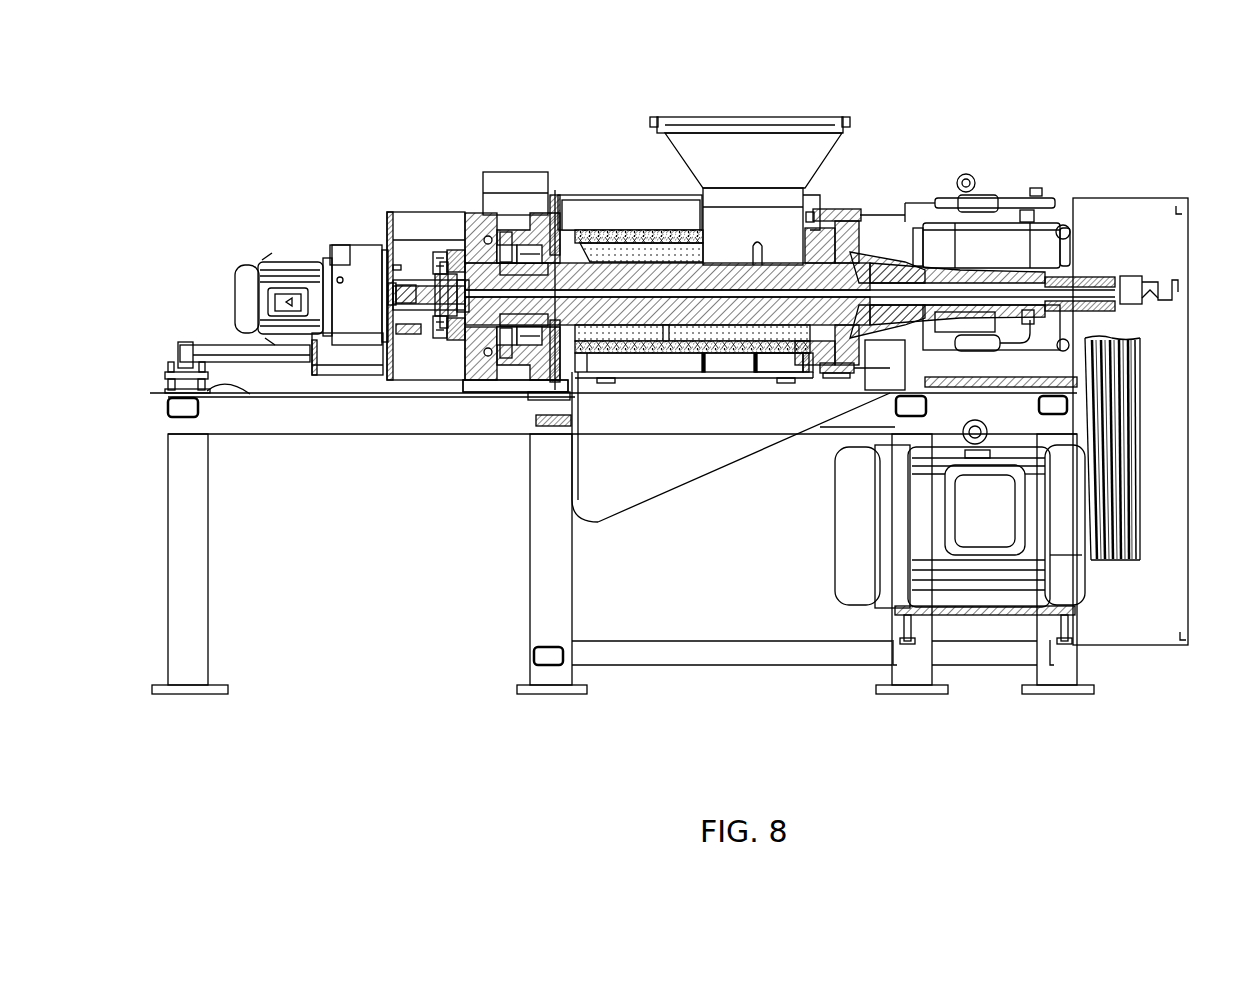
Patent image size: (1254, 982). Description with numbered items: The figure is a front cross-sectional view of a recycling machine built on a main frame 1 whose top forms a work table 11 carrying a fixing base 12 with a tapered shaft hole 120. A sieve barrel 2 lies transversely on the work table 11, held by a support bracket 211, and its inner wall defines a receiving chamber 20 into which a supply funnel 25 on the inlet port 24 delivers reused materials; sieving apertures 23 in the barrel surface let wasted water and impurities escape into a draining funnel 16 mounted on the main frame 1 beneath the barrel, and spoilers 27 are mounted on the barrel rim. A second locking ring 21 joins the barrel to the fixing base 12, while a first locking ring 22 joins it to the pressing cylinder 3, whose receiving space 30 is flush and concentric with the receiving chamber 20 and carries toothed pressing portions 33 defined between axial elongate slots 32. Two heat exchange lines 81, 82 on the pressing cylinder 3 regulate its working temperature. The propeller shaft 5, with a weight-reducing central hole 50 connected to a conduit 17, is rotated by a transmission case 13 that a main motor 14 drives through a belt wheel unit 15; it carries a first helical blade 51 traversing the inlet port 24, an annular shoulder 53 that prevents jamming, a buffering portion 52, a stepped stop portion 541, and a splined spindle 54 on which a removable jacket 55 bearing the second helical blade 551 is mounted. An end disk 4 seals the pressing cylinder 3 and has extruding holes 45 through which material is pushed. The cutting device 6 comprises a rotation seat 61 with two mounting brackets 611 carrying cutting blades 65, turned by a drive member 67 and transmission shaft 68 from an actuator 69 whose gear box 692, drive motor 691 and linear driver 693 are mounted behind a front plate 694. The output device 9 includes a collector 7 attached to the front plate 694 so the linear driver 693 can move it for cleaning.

The main frame 1 is at (640, 684).
The sieve barrel 2 is at (790, 308).
The pressing cylinder 3 is at (520, 395).
The end disk 4 is at (482, 395).
The propeller shaft 5 is at (760, 372).
The cutting device 6 is at (440, 330).
The collector 7 is at (405, 250).
The output device 9 is at (434, 282).
The work table 11 is at (200, 387).
The fixing base 12 is at (862, 242).
The transmission case 13 is at (1000, 240).
The main motor 14 is at (977, 615).
The belt wheel unit 15 is at (1130, 412).
The draining funnel 16 is at (705, 480).
The conduit 17 is at (1130, 280).
The receiving chamber 20 is at (583, 258).
The second locking ring 21 is at (832, 380).
The first locking ring 22 is at (575, 250).
The sieving apertures 23 is at (642, 244).
The inlet port 24 is at (716, 250).
The supply funnel 25 is at (750, 152).
The spoilers 27 is at (593, 470).
The receiving space 30 is at (492, 380).
The elongate slots 32 is at (506, 300).
The toothed pressing portions 33 is at (507, 310).
The extruding holes 45 is at (470, 282).
The central hole 50 is at (790, 372).
The first helical blade 51 is at (762, 235).
The buffering portion 52 is at (635, 372).
The annular shoulder 53 is at (828, 275).
The splined spindle 54 is at (530, 400).
The jacket 55 is at (526, 300).
The rotation seat 61 is at (478, 384).
The cutting blades 65 is at (422, 300).
The drive member 67 is at (400, 340).
The transmission shaft 68 is at (440, 300).
The actuator 69 is at (283, 273).
The heat exchange line 81 is at (520, 262).
The heat exchange line 82 is at (490, 320).
The shaft hole 120 is at (895, 372).
The support bracket 211 is at (710, 372).
The stop portion 541 is at (548, 428).
The second helical blade 551 is at (549, 340).
The mounting brackets 611 is at (460, 305).
The drive motor 691 is at (275, 262).
The gear box 692 is at (345, 244).
The linear driver 693 is at (209, 352).
The front plate 694 is at (397, 262).